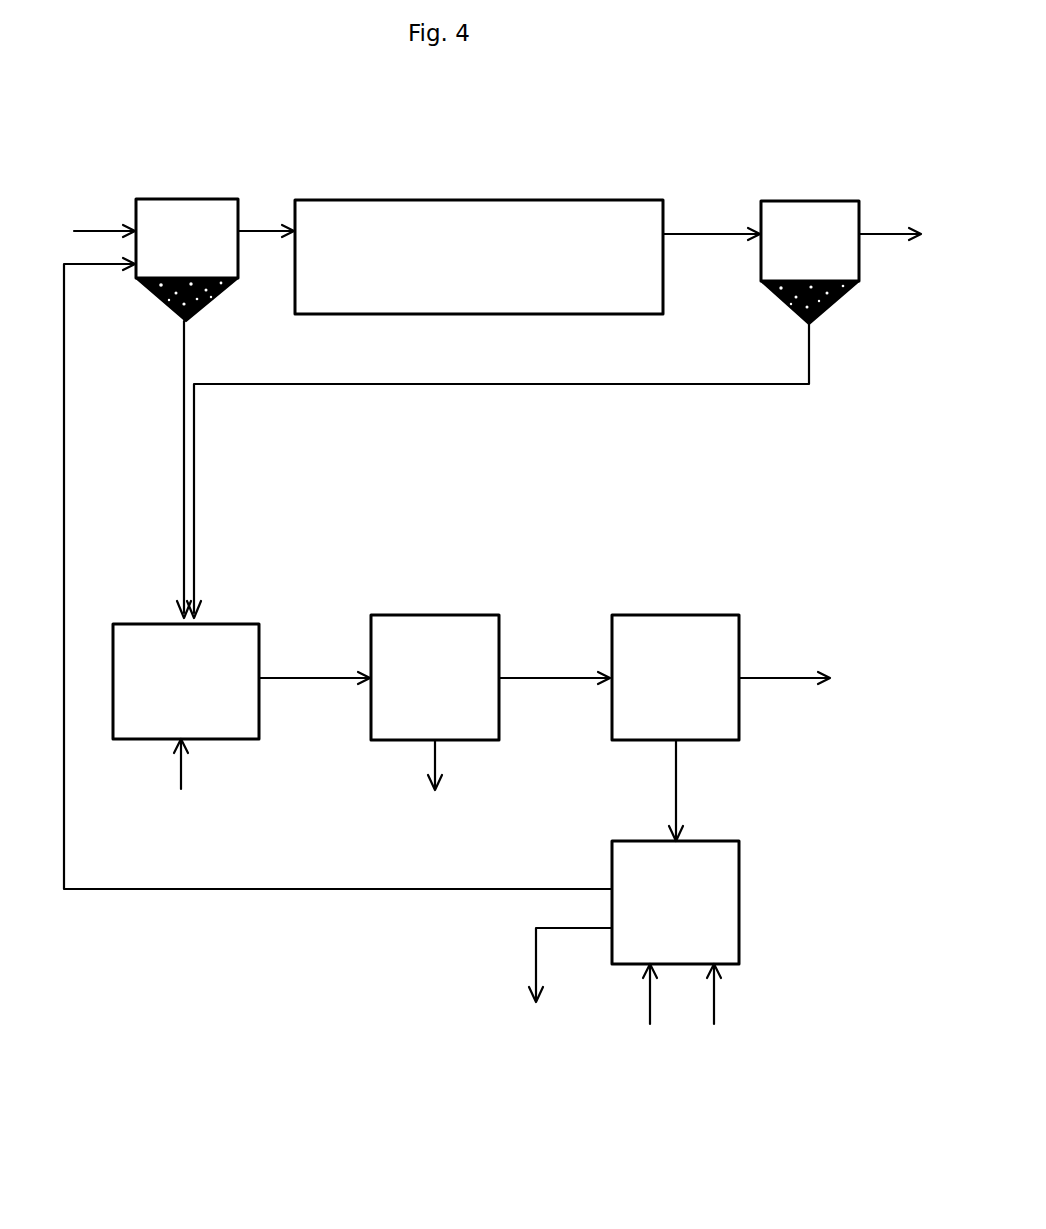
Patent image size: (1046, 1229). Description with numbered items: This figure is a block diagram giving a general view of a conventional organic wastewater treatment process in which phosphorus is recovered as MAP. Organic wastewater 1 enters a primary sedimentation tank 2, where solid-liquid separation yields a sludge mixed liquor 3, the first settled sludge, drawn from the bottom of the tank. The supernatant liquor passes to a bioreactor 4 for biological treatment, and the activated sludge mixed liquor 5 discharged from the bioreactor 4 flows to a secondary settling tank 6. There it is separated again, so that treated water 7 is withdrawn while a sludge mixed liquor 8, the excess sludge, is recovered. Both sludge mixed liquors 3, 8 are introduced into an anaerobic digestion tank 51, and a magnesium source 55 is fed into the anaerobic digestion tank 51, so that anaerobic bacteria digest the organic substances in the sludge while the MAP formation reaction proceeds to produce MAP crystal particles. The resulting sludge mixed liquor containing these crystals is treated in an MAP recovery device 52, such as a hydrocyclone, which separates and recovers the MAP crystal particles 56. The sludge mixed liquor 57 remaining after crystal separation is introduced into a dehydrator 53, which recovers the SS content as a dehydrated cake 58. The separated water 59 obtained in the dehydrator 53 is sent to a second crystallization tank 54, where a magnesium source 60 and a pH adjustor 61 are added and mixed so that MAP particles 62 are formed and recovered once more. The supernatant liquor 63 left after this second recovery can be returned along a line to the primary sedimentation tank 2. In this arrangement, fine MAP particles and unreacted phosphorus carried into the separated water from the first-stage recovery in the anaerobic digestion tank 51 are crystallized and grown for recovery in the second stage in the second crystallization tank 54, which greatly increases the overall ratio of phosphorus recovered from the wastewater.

The organic wastewater 1 is at (94, 231).
The primary sedimentation tank 2 is at (188, 198).
The sludge mixed liquor 3 is at (182, 358).
The bioreactor 4 is at (449, 199).
The activated sludge mixed liquor 5 is at (708, 232).
The secondary settling tank 6 is at (820, 200).
The treated water 7 is at (902, 234).
The sludge mixed liquor 8 is at (808, 360).
The anaerobic digestion tank 51 is at (132, 623).
The MAP recovery device 52 is at (434, 614).
The dehydrator 53 is at (688, 614).
The second crystallization tank 54 is at (738, 888).
The magnesium source 55 is at (181, 780).
The MAP crystal particles 56 is at (435, 781).
The sludge mixed liquor 57 is at (549, 677).
The dehydrated cake 58 is at (803, 679).
The separated water 59 is at (675, 777).
The magnesium source 60 is at (715, 1014).
The pH adjustor 61 is at (651, 1014).
The MAP particles 62 is at (567, 983).
The supernatant liquor 63 is at (330, 890).